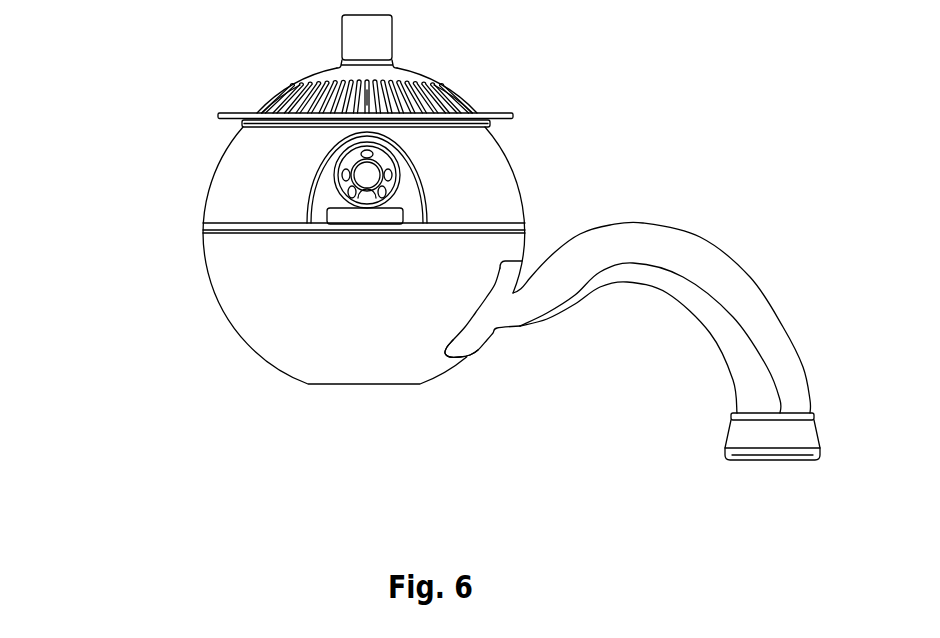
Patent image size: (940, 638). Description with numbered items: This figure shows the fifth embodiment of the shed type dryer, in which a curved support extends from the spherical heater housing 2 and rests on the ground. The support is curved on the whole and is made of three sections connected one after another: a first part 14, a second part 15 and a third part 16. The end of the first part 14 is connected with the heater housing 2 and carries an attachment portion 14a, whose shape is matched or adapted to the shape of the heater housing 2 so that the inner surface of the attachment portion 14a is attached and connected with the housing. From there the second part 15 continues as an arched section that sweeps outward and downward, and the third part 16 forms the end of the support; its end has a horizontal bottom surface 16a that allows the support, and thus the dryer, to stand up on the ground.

The heater housing 2 is at (513, 208).
The first part 14 is at (520, 317).
The attachment portion 14a is at (473, 337).
The second part 15 is at (668, 240).
The third part 16 is at (810, 437).
The horizontal bottom surface 16a is at (784, 472).